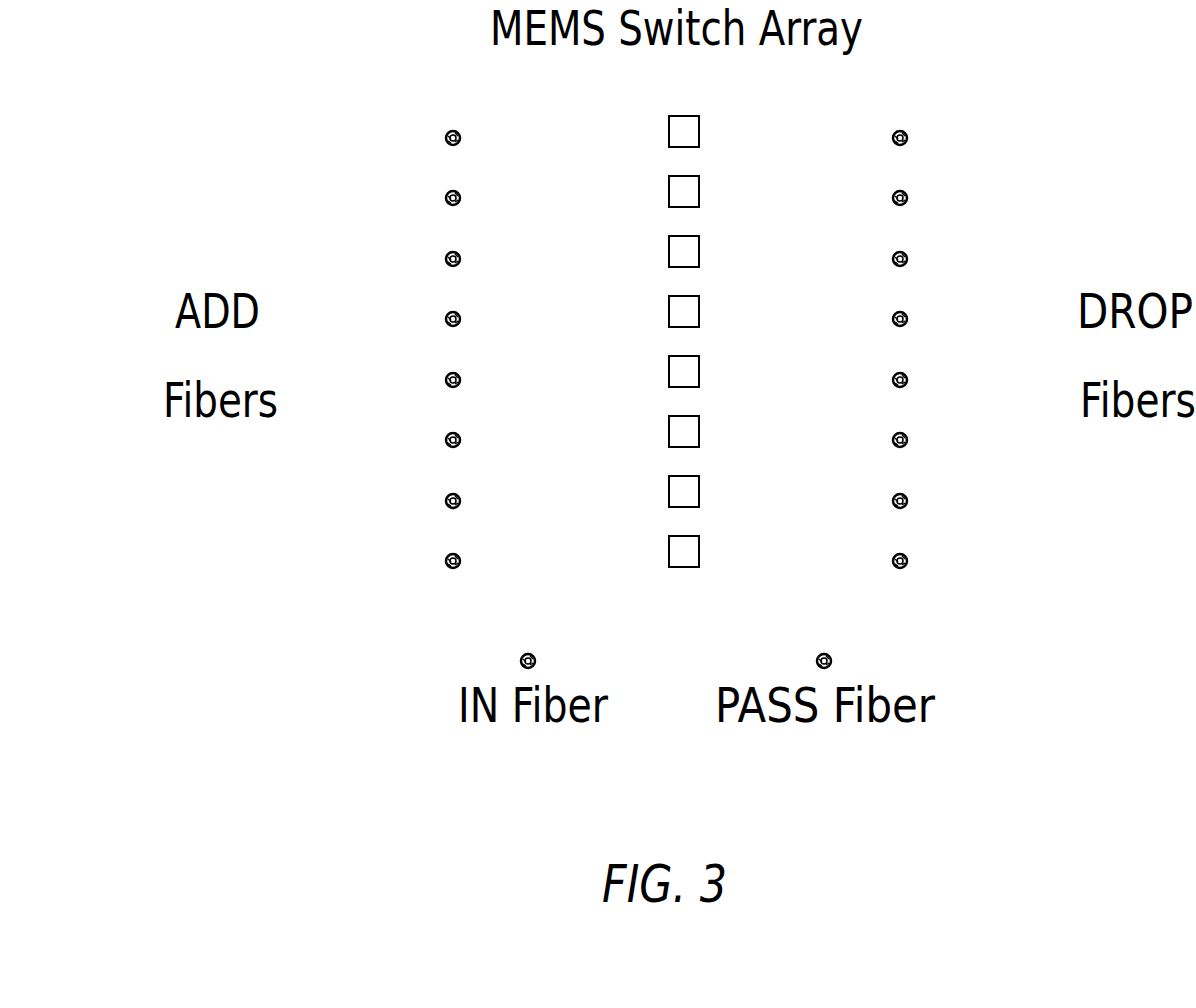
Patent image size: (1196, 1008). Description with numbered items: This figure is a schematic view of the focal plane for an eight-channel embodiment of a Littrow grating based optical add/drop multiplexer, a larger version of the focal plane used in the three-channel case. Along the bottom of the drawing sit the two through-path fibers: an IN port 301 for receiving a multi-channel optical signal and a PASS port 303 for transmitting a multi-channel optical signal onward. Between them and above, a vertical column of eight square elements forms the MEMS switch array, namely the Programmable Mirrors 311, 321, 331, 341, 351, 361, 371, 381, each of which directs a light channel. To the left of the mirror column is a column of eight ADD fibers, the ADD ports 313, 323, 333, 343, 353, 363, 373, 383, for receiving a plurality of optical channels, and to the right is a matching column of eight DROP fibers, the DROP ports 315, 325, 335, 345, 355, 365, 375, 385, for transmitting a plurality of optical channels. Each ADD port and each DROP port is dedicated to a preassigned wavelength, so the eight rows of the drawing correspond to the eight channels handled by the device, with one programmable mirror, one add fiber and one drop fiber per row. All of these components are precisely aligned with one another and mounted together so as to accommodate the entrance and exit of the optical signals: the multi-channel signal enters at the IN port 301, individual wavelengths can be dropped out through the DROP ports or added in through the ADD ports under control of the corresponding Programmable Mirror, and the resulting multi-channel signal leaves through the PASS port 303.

The IN port 301 is at (526, 653).
The PASS port 303 is at (827, 654).
The Programmable Mirror 311 is at (669, 132).
The Programmable Mirror 321 is at (669, 192).
The Programmable Mirror 331 is at (669, 252).
The Programmable Mirror 341 is at (669, 312).
The Programmable Mirror 351 is at (669, 372).
The Programmable Mirror 361 is at (669, 432).
The Programmable Mirror 371 is at (669, 492).
The Programmable Mirror 381 is at (669, 552).
The ADD port 313 is at (446, 139).
The ADD port 323 is at (446, 199).
The ADD port 333 is at (446, 260).
The ADD port 343 is at (446, 320).
The ADD port 353 is at (446, 381).
The ADD port 363 is at (446, 441).
The ADD port 373 is at (446, 502).
The ADD port 383 is at (446, 562).
The DROP port 315 is at (907, 139).
The DROP port 325 is at (907, 199).
The DROP port 335 is at (907, 260).
The DROP port 345 is at (907, 320).
The DROP port 355 is at (907, 381).
The DROP port 365 is at (907, 441).
The DROP port 375 is at (907, 502).
The DROP port 385 is at (907, 562).